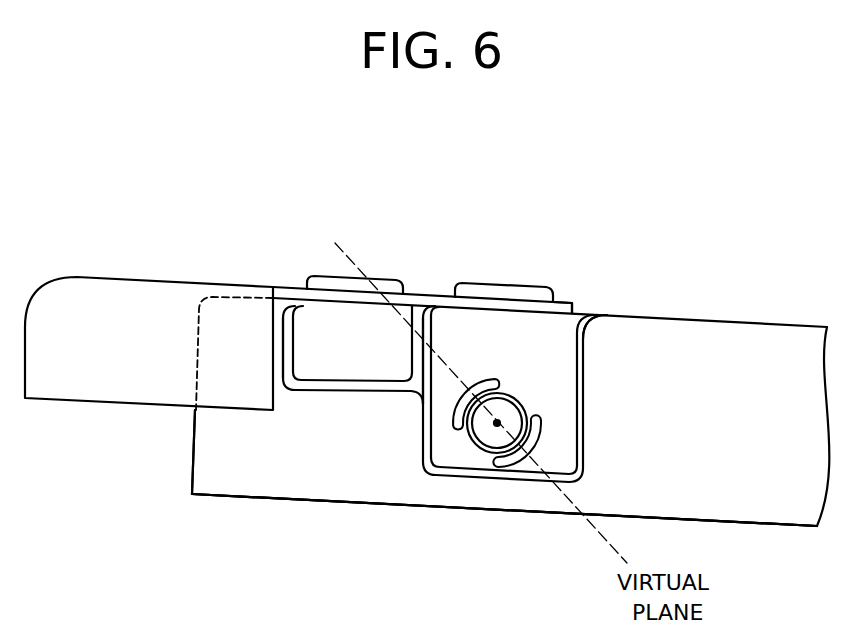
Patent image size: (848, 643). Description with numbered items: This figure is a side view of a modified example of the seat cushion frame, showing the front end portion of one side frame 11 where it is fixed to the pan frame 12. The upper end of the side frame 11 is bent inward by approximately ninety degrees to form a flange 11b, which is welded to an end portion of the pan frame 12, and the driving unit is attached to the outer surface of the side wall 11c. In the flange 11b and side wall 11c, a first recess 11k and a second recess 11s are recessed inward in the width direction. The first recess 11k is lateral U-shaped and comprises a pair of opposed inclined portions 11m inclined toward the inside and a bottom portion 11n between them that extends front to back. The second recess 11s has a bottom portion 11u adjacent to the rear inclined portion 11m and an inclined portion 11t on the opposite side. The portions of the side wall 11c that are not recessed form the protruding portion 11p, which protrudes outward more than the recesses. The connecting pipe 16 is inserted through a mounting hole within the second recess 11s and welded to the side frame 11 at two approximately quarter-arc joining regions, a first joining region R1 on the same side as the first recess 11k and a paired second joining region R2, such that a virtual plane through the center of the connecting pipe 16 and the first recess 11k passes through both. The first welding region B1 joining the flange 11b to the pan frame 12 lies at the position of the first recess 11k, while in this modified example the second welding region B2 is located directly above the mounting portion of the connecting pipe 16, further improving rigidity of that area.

The side frame 11 is at (560, 521).
The pan frame 12 is at (97, 302).
The flange 11b is at (232, 297).
The side wall 11c is at (213, 498).
The bottom portion 11n is at (322, 313).
The inclined portions 11m is at (292, 292).
The second recess 11s is at (510, 322).
The inclined portion 11t is at (583, 318).
The bottom portion 11u is at (553, 330).
The first welding region B1 is at (387, 283).
The second welding region B2 is at (528, 293).
The connecting pipe 16 is at (523, 397).
The first joining region R1 is at (488, 380).
The second joining region R2 is at (537, 428).
The first recess 11k is at (355, 310).
The protruding portion 11p is at (220, 463).